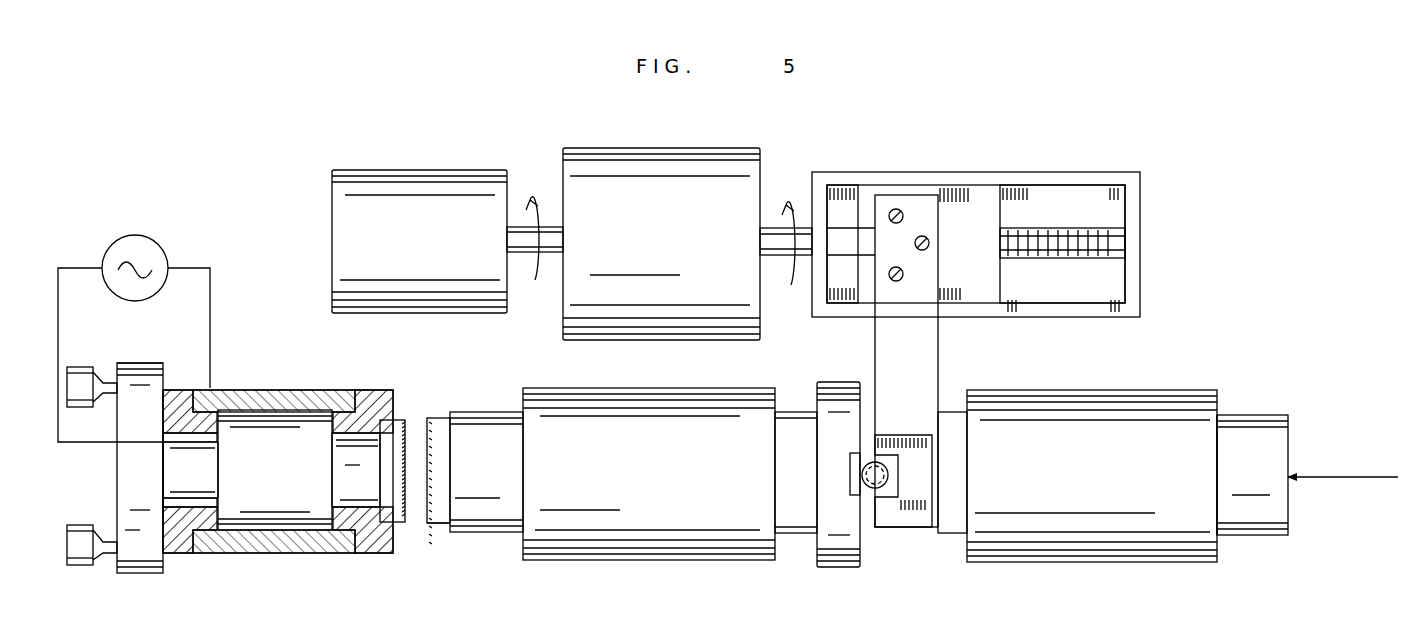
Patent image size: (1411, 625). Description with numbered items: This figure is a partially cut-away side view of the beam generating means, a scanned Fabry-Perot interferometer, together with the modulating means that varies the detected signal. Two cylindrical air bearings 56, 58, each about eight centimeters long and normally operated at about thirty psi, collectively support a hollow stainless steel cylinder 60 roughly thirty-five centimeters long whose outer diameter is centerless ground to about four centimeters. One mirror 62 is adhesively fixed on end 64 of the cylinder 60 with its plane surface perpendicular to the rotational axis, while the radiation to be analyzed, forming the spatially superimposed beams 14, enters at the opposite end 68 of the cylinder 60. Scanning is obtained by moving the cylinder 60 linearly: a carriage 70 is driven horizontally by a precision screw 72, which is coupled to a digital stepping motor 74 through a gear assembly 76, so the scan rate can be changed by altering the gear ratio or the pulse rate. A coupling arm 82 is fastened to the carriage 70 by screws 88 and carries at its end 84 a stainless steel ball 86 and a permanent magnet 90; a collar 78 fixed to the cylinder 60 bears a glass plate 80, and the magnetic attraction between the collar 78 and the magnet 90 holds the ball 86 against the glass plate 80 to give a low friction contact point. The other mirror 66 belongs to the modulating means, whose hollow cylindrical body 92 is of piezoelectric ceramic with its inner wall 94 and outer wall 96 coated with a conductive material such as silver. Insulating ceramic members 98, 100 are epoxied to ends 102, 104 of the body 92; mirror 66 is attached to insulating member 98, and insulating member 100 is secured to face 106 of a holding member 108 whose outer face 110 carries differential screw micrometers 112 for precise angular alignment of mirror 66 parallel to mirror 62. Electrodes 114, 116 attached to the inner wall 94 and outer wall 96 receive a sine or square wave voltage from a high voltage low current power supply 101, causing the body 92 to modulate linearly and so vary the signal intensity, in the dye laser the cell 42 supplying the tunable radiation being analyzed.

The beams of monochromatic radiation 14 is at (1383, 477).
The cell 42 is at (365, 382).
The cylindrical air bearing 56 is at (642, 530).
The cylindrical air bearing 58 is at (1103, 542).
The hollow metal cylinder 60 is at (487, 513).
The mirror 62 is at (437, 477).
The end of cylinder 64 is at (450, 448).
The mirror 66 is at (395, 420).
The end of cylinder 68 is at (1288, 513).
The carriage 70 is at (972, 290).
The precision screw 72 is at (1030, 232).
The digital stepping motor 74 is at (436, 244).
The gear assembly 76 is at (678, 244).
The collar 78 is at (833, 550).
The glass plate 80 is at (850, 468).
The coupling arm 82 is at (927, 375).
The end of coupling arm 84 is at (900, 508).
The ball 86 is at (870, 473).
The screws 88 is at (896, 209).
The permanent magnet 90 is at (897, 480).
The hollow cylindrical body 92 is at (312, 388).
The inner wall 94 is at (278, 413).
The outer wall 96 is at (273, 385).
The insulating member 98 is at (390, 543).
The insulating member 100 is at (182, 543).
The power supply 101 is at (158, 250).
The end of cylindrical body 102 is at (370, 553).
The end of cylindrical body 104 is at (195, 542).
The face of holding member 106 is at (165, 373).
The holding member 108 is at (130, 467).
The outer face of holding member 110 is at (117, 500).
The differential screw micrometers 112 is at (78, 375).
The electrode 114 is at (205, 412).
The electrode 116 is at (210, 385).